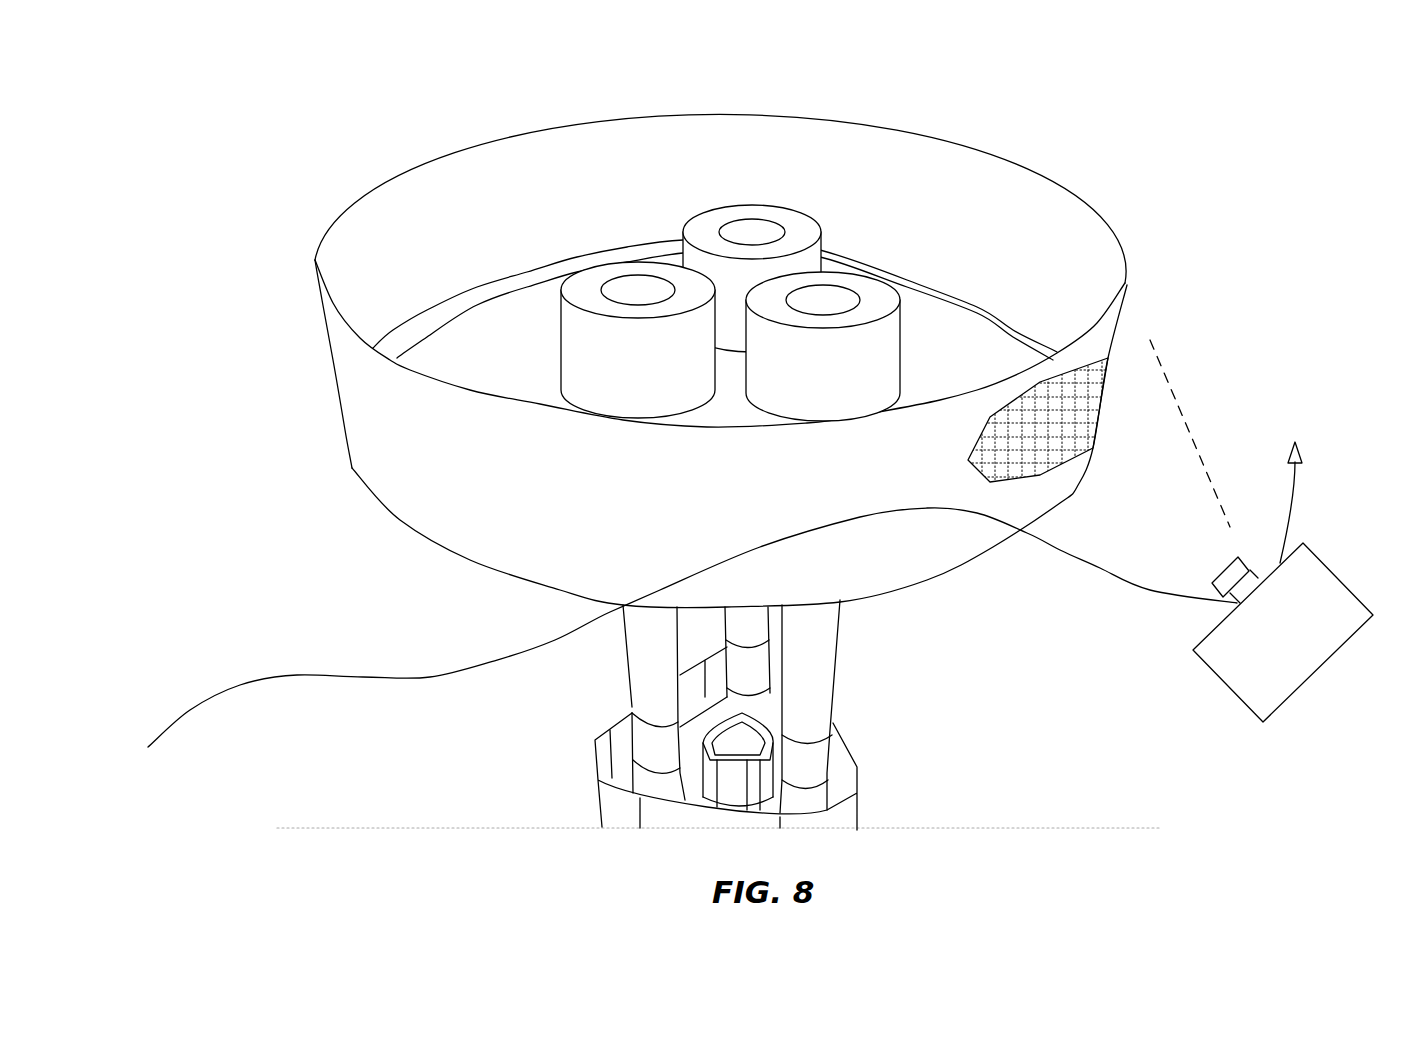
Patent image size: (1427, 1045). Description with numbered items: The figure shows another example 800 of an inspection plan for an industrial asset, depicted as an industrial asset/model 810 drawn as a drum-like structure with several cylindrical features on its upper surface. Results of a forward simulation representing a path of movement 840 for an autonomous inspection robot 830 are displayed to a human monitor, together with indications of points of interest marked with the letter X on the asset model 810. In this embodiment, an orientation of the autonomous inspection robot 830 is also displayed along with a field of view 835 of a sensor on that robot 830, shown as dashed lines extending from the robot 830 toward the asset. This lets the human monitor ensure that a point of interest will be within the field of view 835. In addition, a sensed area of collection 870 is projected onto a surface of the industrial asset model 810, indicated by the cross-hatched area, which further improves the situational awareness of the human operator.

The example of an inspection plan 800 is at (418, 108).
The industrial asset/model 810 is at (950, 145).
The autonomous inspection robot 830 is at (1328, 567).
The field of view 835 is at (1163, 373).
The path of movement 840 is at (325, 673).
The sensed area of collection 870 is at (1195, 562).